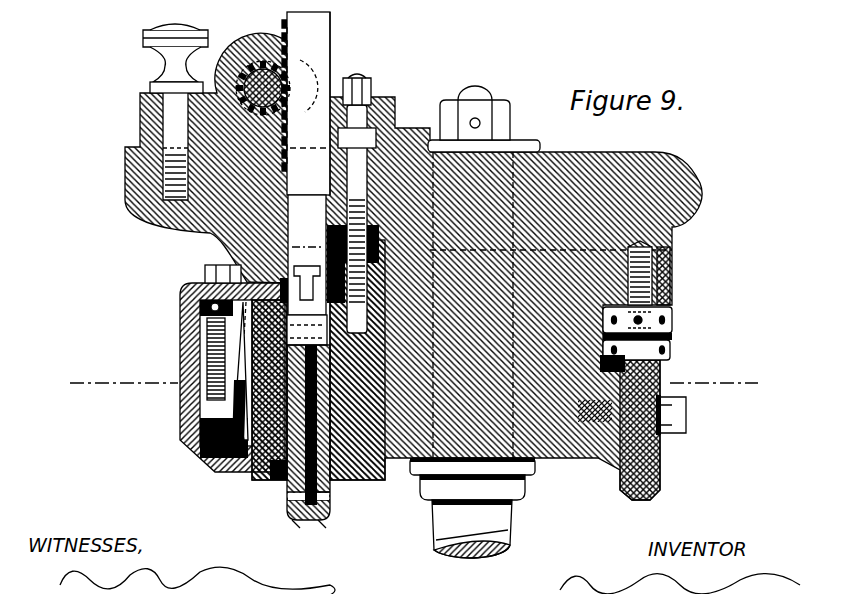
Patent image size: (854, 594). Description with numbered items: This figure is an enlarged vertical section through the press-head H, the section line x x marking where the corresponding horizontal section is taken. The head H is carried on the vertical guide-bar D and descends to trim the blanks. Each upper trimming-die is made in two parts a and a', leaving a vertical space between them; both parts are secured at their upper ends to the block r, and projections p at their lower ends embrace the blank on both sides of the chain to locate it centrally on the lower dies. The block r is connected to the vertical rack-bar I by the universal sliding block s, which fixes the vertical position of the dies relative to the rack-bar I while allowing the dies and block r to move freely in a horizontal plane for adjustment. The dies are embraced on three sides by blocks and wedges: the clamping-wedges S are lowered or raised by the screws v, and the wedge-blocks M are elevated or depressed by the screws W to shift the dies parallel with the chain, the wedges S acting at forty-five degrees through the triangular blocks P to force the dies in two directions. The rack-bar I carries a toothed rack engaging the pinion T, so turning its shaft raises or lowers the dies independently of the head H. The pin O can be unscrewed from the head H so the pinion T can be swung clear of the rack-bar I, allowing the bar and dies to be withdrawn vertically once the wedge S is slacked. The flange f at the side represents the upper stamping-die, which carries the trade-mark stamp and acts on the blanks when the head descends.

The press-head H is at (424, 266).
The upper stamping-die f is at (648, 483).
The triangular block P is at (262, 484).
The clamping-wedge S is at (217, 368).
The lever R is at (242, 373).
The screw v is at (204, 270).
The wedge-block M is at (378, 478).
The screw W is at (370, 84).
The pinion T is at (266, 40).
The rack-bar I is at (307, 255).
The universal sliding block s is at (307, 289).
The block r is at (307, 338).
The upper trimming-die part a is at (291, 432).
The upper trimming-die part a' is at (335, 499).
The projection p is at (318, 522).
The pin O is at (175, 110).
The guide-bar D is at (472, 508).
The section line x is at (410, 383).